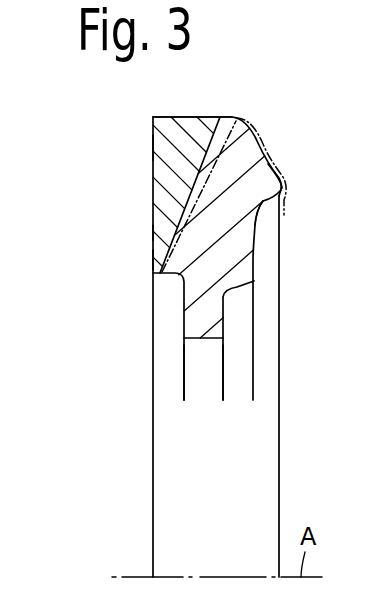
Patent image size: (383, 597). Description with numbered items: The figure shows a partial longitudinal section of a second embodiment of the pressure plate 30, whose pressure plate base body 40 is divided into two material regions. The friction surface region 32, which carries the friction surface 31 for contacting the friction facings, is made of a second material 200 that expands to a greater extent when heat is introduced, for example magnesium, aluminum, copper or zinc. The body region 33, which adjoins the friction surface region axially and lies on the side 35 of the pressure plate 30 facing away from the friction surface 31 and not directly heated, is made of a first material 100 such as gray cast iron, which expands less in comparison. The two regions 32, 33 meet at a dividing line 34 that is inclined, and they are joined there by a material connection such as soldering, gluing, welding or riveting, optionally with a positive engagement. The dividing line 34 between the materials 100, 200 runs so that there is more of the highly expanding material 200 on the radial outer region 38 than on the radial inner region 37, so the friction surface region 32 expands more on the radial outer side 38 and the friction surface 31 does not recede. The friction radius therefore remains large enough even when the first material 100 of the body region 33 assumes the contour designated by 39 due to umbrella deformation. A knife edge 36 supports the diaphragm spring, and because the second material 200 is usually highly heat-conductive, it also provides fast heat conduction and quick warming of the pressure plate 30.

The pressure plate 30 is at (103, 384).
The friction surface 31 is at (153, 173).
The friction surface region 32 is at (153, 128).
The body region 33 is at (248, 268).
The dividing line 34 is at (153, 232).
The side facing away from the friction surface 35 is at (274, 128).
The knife edge 36 is at (272, 177).
The radial inner region 37 is at (110, 259).
The radial outer region 38 is at (137, 147).
The contour due to umbrella deformation 39 is at (286, 165).
The pressure plate base body 40 is at (200, 385).
The first material 100 is at (247, 242).
The second material 200 is at (193, 127).